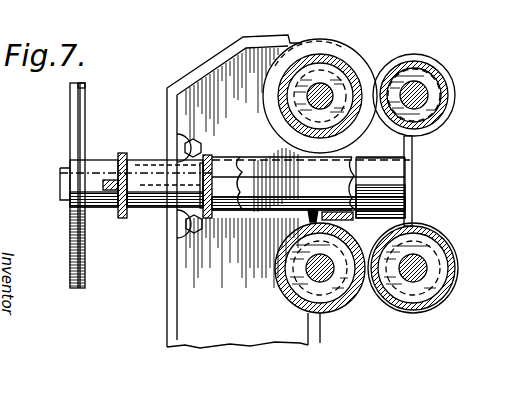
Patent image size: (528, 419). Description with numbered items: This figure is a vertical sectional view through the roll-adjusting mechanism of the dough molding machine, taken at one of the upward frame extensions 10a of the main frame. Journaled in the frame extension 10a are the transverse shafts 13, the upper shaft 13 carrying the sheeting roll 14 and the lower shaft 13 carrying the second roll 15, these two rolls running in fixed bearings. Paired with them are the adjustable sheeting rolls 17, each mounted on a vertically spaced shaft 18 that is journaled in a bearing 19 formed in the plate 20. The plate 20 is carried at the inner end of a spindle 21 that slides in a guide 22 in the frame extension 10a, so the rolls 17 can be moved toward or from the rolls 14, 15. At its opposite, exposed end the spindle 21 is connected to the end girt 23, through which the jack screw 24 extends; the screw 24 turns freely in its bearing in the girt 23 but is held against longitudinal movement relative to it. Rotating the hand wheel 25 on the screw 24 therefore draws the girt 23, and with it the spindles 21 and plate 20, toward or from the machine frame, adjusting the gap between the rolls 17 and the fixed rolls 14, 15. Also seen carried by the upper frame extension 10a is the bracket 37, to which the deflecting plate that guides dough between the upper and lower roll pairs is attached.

The upward frame extension 10a is at (176, 283).
The transverse shaft 13 is at (308, 96).
The sheeting roll 14 is at (280, 99).
The second roll 15 is at (300, 300).
The adjustable sheeting roll 17 is at (453, 104).
The vertically spaced shaft 18 is at (426, 92).
The bearing 19 is at (432, 62).
The plate 20 is at (413, 178).
The spindle 21 is at (360, 186).
The guide 22 is at (311, 189).
The end girt 23 is at (123, 212).
The jack screw 24 is at (222, 178).
The hand wheel 25 is at (70, 135).
The bracket 37 is at (242, 172).